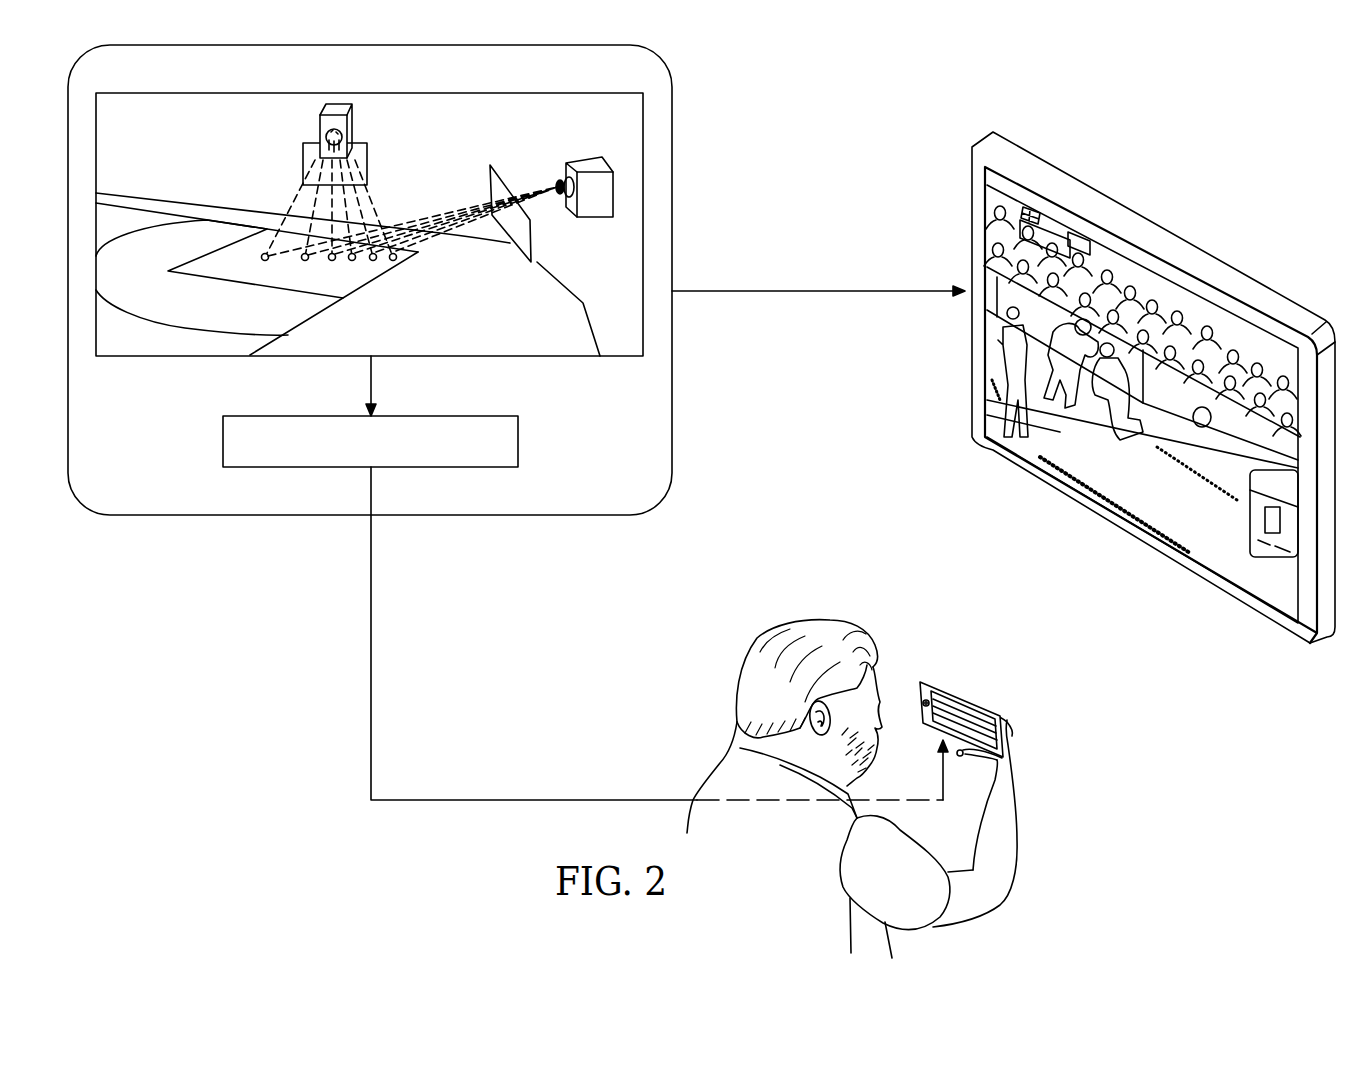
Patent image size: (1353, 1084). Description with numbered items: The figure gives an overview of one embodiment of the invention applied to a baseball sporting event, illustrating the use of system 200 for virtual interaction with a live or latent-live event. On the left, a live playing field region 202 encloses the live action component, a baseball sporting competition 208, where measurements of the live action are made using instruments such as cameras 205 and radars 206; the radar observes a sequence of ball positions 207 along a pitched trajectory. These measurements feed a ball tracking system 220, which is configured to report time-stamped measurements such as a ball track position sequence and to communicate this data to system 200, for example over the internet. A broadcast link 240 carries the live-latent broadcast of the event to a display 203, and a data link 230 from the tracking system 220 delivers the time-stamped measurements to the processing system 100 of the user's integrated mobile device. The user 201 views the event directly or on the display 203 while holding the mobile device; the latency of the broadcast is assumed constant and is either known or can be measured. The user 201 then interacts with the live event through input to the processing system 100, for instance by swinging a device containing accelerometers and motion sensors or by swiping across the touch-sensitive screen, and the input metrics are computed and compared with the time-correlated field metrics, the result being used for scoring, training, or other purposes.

The processing system 100 is at (977, 710).
The system 200 is at (1259, 120).
The user 201 is at (700, 774).
The live playing field 202 is at (681, 170).
The display 203 is at (1169, 224).
The cameras 205 is at (520, 168).
The radars 206 is at (382, 142).
The tracked ball positions 207 is at (374, 262).
The baseball sporting competition 208 is at (551, 363).
The tracking system 220 is at (222, 440).
The data link to mobile device 230 is at (530, 799).
The broadcast link to display 240 is at (838, 293).